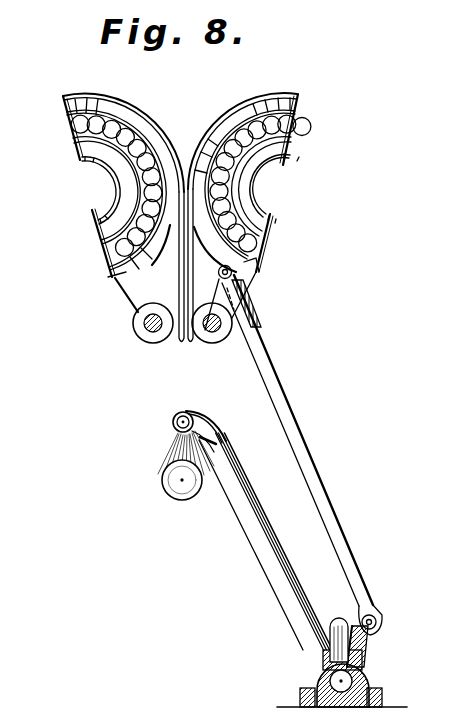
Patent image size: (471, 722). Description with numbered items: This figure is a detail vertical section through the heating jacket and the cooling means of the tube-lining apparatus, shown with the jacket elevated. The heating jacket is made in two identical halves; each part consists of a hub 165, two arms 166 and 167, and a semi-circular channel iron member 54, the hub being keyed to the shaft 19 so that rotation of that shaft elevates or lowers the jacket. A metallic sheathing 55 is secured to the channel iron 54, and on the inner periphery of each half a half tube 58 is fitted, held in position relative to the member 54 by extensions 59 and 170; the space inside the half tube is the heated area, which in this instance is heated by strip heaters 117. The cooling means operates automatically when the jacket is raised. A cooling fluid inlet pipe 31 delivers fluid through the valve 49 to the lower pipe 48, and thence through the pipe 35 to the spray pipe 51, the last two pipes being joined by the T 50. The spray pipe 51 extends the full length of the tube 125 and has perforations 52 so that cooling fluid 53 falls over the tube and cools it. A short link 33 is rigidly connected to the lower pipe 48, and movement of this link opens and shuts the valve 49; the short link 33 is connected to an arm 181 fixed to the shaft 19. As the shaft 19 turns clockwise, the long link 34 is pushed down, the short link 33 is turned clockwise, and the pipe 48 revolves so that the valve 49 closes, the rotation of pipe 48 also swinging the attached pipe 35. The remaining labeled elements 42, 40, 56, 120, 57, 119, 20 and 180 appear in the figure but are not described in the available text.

The housing cap ring 42 is at (138, 106).
The ball bearing race 40 is at (122, 140).
The housing end face 56 is at (76, 136).
The bore 120 is at (108, 160).
The housing flange 57 is at (94, 232).
The metallic sheathing 55 is at (253, 113).
The semi-circular channel iron member 54 is at (223, 117).
The extension 170 is at (293, 124).
The inner race 119 is at (272, 150).
The strip heaters 117 is at (262, 176).
The half tube 58 is at (267, 193).
The extension 59 is at (268, 222).
The arm 167 is at (180, 340).
The pivot 20 is at (155, 333).
The shaft 19 is at (211, 333).
The arm 166 is at (248, 279).
The arm 181 is at (224, 297).
The hub 165 is at (236, 327).
The long link 34 is at (291, 415).
The pivot pin 180 is at (377, 622).
The short link 33 is at (358, 650).
The spray pipe 51 is at (172, 418).
The T 50 is at (214, 426).
The perforations 52 is at (178, 437).
The cooling fluid 53 is at (167, 458).
The tube 125 is at (180, 492).
The pipe 35 is at (262, 547).
The cooling fluid inlet pipe 31 is at (340, 618).
The valve 49 is at (336, 670).
The pipe 48 is at (320, 679).